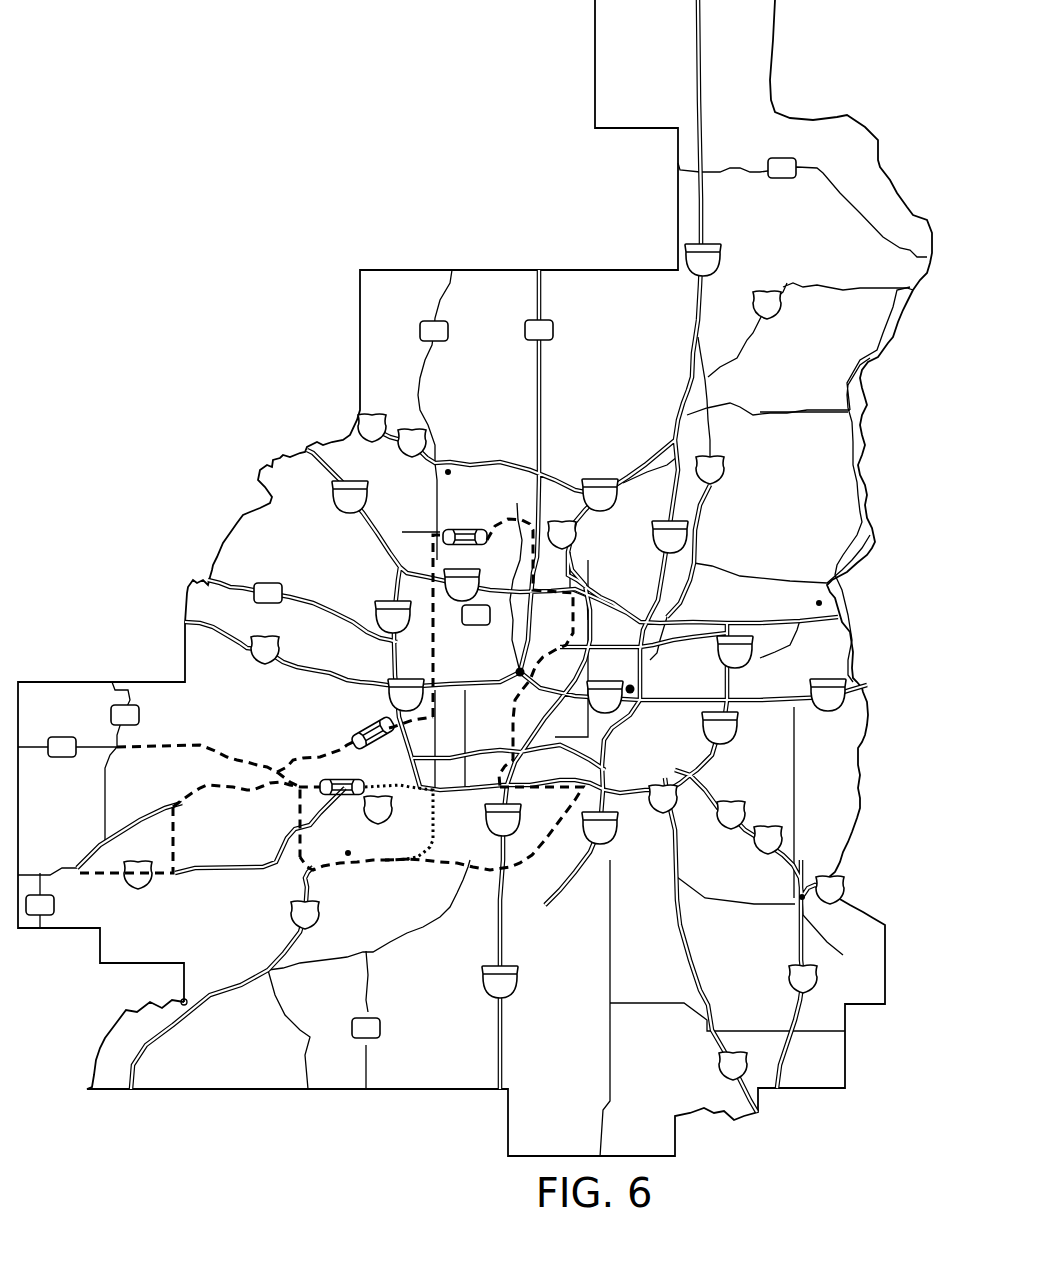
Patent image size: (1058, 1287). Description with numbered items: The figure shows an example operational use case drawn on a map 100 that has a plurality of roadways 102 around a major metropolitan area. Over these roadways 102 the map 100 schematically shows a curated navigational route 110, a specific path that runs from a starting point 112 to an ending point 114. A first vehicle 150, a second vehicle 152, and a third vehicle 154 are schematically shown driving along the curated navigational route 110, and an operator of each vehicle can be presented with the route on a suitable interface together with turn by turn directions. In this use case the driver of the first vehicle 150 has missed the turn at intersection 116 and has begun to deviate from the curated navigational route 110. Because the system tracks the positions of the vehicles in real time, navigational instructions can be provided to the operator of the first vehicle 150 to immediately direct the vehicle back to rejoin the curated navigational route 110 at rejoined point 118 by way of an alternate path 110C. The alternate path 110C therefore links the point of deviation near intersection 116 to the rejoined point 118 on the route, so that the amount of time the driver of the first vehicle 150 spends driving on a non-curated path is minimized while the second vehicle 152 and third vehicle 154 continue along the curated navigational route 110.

The map 100 is at (475, 578).
The roadways 102 is at (525, 938).
The curated navigational route 110 is at (340, 867).
The alternate path 110C is at (447, 867).
The starting point 112 is at (72, 858).
The ending point 114 is at (148, 730).
The intersection 116 is at (290, 798).
The rejoined point 118 is at (393, 880).
The first vehicle 150 is at (340, 779).
The second vehicle 152 is at (476, 520).
The third vehicle 154 is at (360, 727).